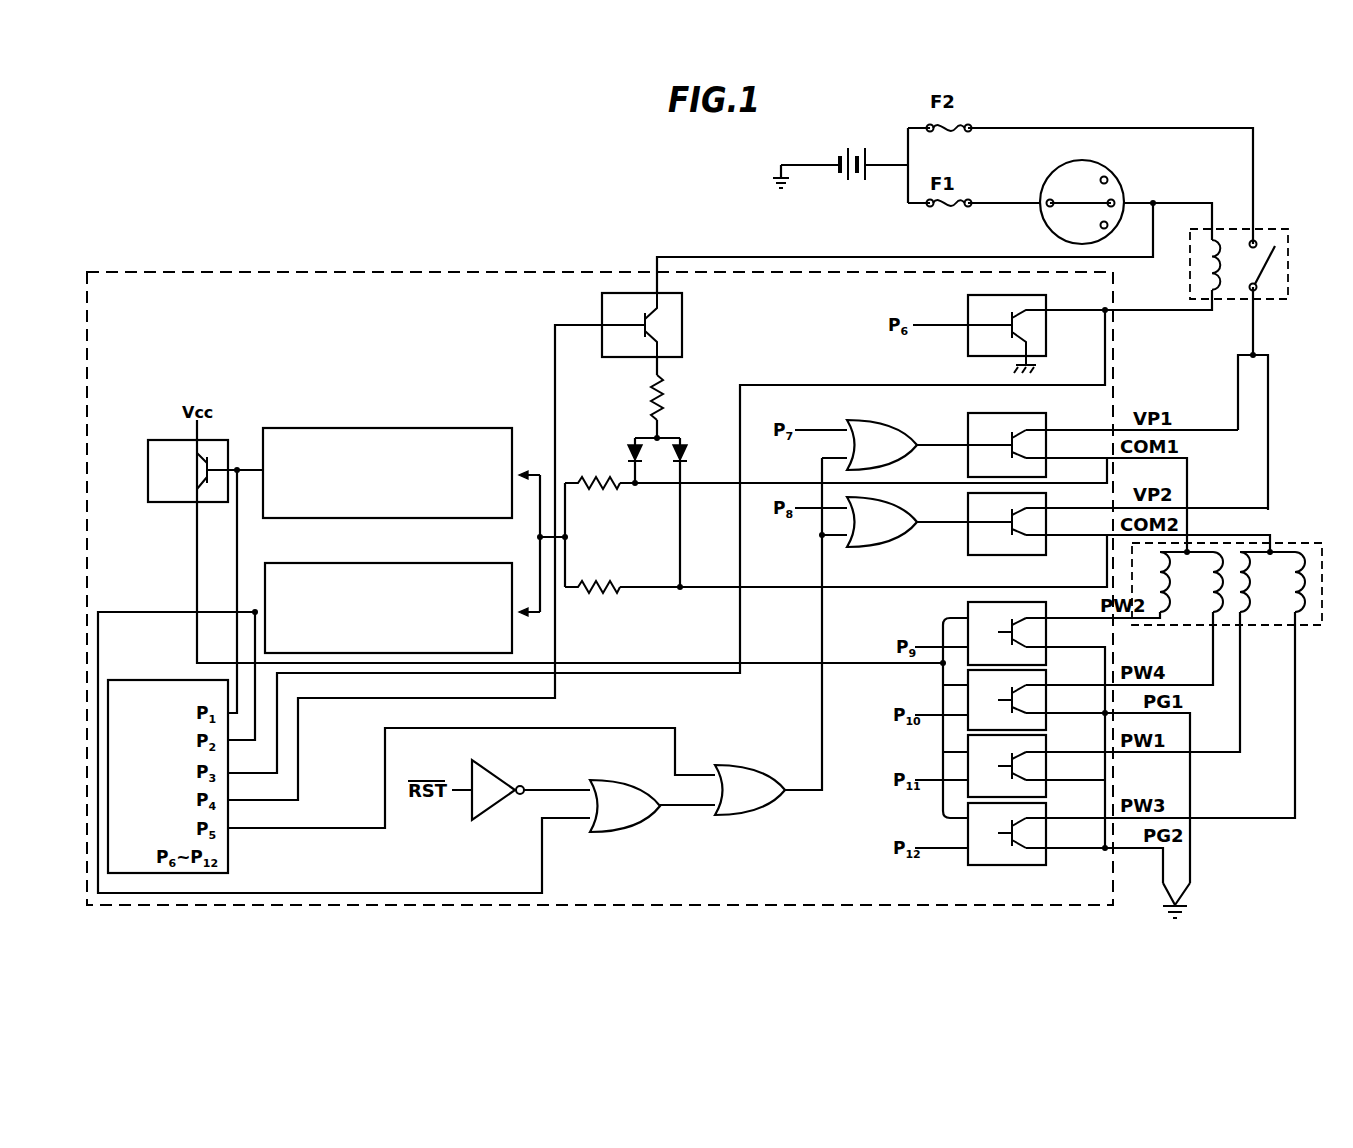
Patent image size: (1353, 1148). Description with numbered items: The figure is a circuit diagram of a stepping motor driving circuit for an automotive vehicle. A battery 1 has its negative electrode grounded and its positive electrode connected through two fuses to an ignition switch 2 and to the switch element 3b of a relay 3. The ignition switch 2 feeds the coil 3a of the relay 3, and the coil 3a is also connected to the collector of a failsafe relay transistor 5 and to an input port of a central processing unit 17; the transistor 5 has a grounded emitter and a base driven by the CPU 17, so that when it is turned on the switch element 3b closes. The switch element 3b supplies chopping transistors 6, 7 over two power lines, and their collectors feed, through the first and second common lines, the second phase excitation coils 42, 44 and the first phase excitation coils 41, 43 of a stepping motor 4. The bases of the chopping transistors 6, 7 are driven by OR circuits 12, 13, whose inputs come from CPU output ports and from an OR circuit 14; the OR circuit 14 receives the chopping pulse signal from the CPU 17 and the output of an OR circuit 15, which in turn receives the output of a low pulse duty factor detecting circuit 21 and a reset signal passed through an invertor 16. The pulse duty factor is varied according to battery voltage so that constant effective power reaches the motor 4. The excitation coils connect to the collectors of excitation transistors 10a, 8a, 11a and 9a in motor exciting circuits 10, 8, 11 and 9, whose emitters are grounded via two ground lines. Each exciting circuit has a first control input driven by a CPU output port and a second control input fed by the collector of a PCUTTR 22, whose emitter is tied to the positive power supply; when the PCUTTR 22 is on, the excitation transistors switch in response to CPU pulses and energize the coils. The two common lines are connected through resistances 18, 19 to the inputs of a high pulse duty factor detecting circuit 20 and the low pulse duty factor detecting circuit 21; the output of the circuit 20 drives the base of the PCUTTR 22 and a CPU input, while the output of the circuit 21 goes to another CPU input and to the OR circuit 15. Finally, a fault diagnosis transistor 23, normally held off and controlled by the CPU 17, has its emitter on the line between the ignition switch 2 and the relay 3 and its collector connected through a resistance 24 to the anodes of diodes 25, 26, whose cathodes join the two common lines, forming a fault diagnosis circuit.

The battery 1 is at (838, 178).
The ignition switch 2 is at (1043, 181).
The relay 3 is at (1242, 228).
The coil 3a is at (1200, 289).
The switch element 3b is at (1250, 268).
The stepping motor 4 is at (1300, 543).
The failsafe relay transistor 5 is at (1014, 318).
The chopping transistor 6 is at (1022, 434).
The chopping transistor 7 is at (1016, 518).
The motor exciting circuit 8 is at (968, 612).
The excitation transistor 8a is at (1026, 620).
The motor exciting circuit 9 is at (1047, 705).
The excitation transistor 9a is at (1047, 684).
The motor exciting circuit 10 is at (1047, 765).
The excitation transistor 10a is at (1026, 753).
The motor exciting circuit 11 is at (1047, 865).
The excitation transistor 11a is at (1026, 819).
The OR circuit 12 is at (875, 422).
The OR circuit 13 is at (880, 503).
The OR circuit 14 is at (740, 766).
The OR circuit 15 is at (635, 832).
The invertor 16 is at (500, 812).
The central processing unit 17 is at (175, 680).
The resistance 18 is at (580, 486).
The resistance 19 is at (580, 592).
The high pulse duty factor detecting circuit 20 is at (460, 428).
The low pulse duty factor detecting circuit 21 is at (462, 563).
The PCUTTR 22 is at (182, 441).
The fault diagnosis transistor 23 is at (602, 320).
The resistance 24 is at (650, 396).
The diode 25 is at (629, 451).
The diode 26 is at (688, 446).
The first phase excitation coil 41 is at (1244, 616).
The second phase excitation coil 42 is at (1162, 616).
The first phase excitation coil 43 is at (1298, 616).
The second phase excitation coil 44 is at (1216, 616).